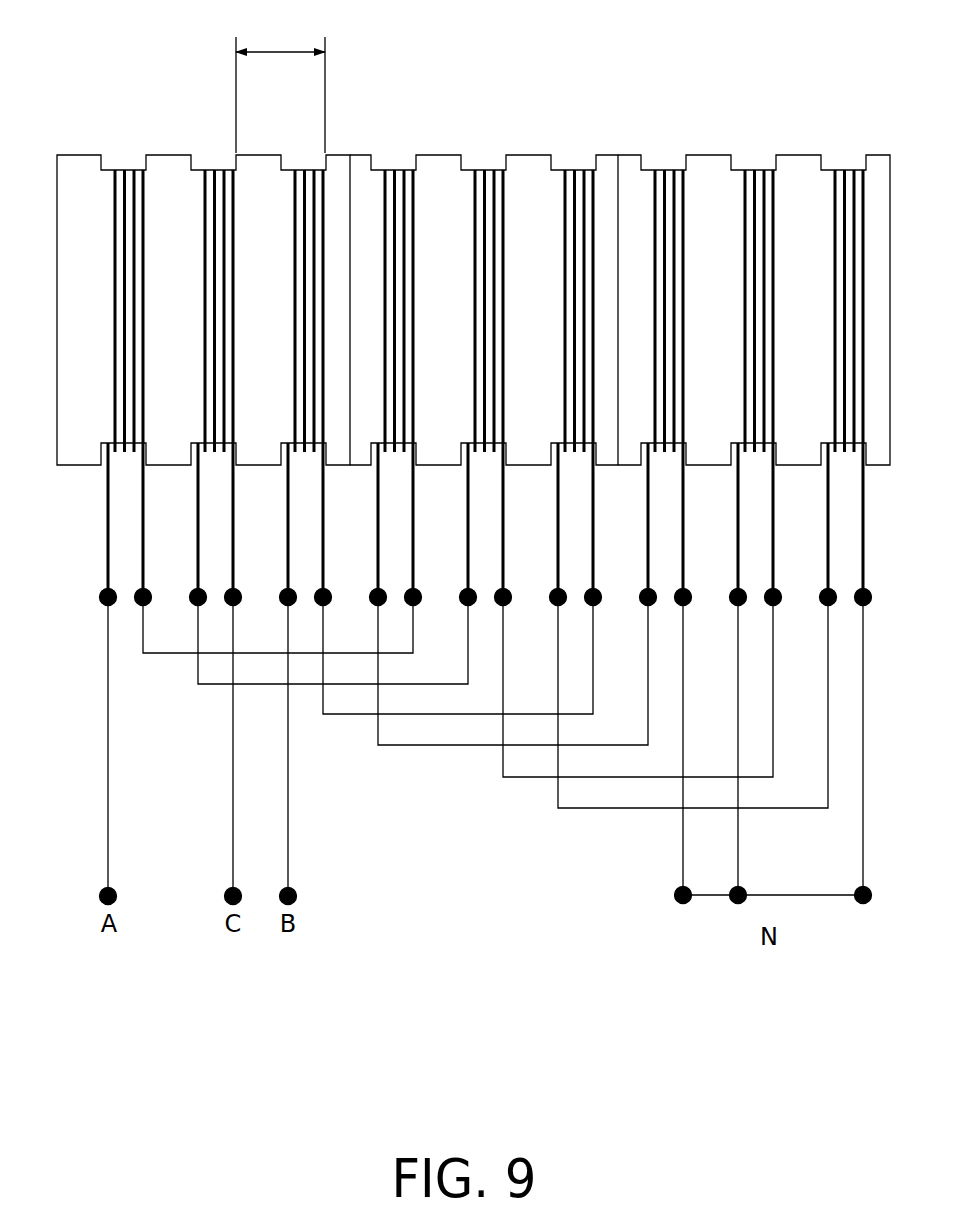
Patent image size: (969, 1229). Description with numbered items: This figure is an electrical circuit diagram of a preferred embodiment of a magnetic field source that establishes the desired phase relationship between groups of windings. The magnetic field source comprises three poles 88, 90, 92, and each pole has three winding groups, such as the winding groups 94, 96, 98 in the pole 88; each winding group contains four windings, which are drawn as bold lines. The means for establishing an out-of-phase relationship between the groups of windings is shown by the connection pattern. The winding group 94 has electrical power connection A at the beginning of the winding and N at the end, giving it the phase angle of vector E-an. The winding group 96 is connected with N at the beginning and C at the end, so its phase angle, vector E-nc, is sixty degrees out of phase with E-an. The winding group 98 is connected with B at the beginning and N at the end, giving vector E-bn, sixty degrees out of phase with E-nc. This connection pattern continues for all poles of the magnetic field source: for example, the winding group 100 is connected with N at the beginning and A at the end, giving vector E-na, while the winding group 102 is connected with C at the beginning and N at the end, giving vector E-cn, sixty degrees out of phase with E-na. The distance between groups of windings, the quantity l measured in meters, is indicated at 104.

The pole 88 is at (349, 83).
The pole 90 is at (618, 67).
The pole 92 is at (890, 65).
The winding group 94 is at (122, 157).
The winding group 96 is at (212, 157).
The winding group 98 is at (298, 157).
The winding group 100 is at (388, 157).
The winding group 102 is at (485, 156).
The distance between groups of windings 104 is at (304, 50).